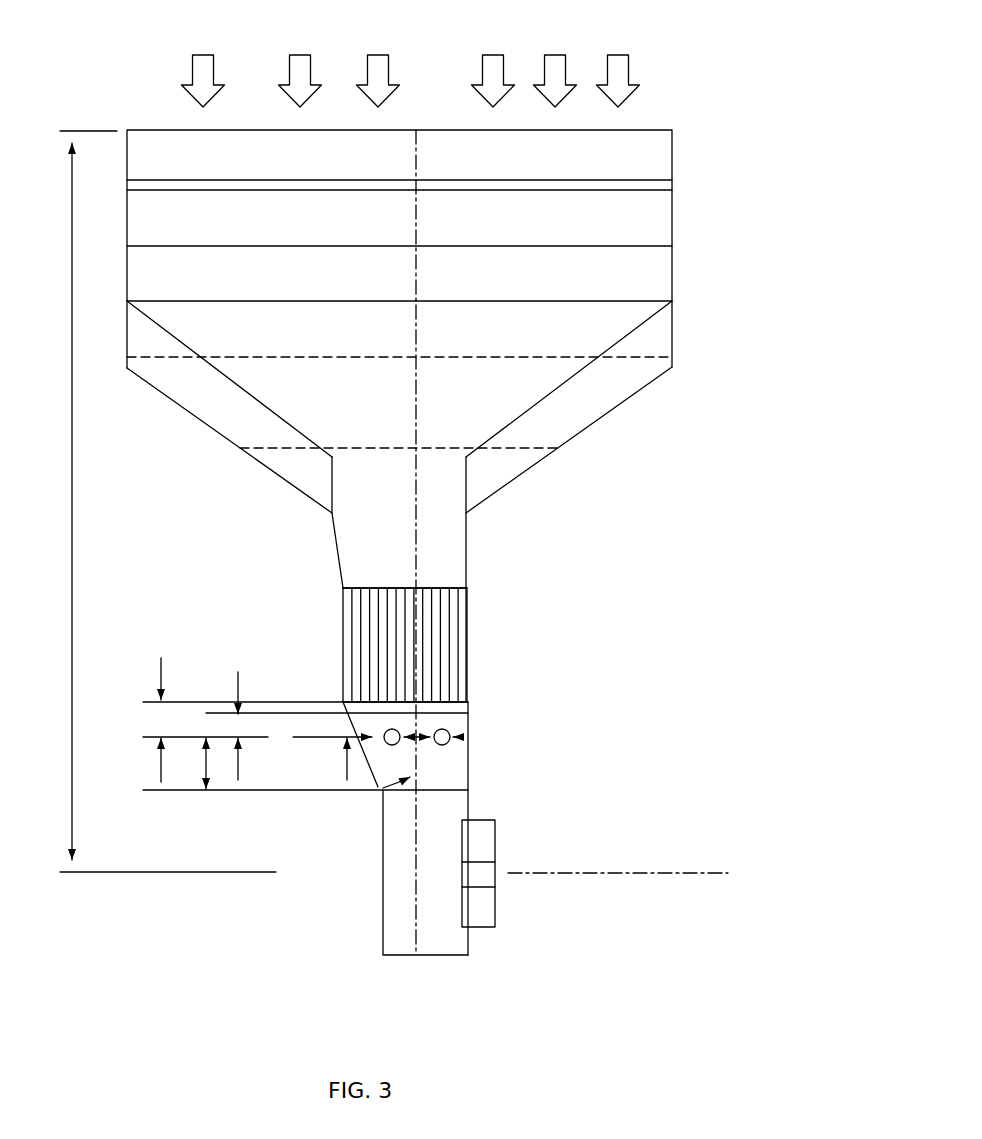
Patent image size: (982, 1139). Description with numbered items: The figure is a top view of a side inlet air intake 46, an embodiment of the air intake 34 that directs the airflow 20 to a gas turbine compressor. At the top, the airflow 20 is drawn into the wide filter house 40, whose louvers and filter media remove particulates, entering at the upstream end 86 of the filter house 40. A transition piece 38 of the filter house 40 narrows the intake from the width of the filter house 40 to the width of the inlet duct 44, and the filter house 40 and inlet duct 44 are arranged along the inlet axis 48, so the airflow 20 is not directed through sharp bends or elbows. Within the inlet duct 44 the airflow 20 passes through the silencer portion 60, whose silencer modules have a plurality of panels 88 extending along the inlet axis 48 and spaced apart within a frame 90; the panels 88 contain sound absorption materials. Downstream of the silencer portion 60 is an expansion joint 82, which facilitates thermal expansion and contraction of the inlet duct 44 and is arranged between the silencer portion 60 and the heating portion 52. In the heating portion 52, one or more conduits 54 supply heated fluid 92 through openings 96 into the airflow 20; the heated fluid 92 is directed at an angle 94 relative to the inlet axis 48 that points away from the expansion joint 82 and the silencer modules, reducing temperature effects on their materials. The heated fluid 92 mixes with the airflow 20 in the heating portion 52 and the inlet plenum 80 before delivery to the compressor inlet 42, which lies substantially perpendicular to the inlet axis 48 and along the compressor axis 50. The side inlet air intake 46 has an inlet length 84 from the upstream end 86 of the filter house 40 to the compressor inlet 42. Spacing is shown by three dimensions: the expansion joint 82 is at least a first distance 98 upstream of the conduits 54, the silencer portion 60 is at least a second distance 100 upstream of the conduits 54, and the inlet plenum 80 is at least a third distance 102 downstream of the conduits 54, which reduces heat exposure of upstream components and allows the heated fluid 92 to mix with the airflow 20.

The airflow 20 is at (288, 70).
The air intake 34 is at (716, 298).
The side inlet air intake 46 is at (399, 402).
The upstream end 86 is at (143, 126).
The filter house 40 is at (675, 157).
The inlet axis 48 is at (424, 163).
The transition piece 38 is at (567, 442).
The inlet duct 44 is at (642, 665).
The silencer portion 60 is at (470, 636).
The panels 88 is at (459, 603).
The frame 90 is at (373, 588).
The expansion joint 82 is at (470, 704).
The openings 96 is at (343, 710).
The conduits 54 is at (386, 730).
The heated fluid 92 is at (460, 734).
The angle 94 is at (372, 783).
The heating portion 52 is at (470, 768).
The inlet plenum 80 is at (383, 928).
The compressor inlet 42 is at (478, 860).
The compressor axis 50 is at (614, 873).
The inlet length 84 is at (72, 504).
The second distance 100 is at (158, 673).
The first distance 98 is at (236, 688).
The third distance 102 is at (203, 765).